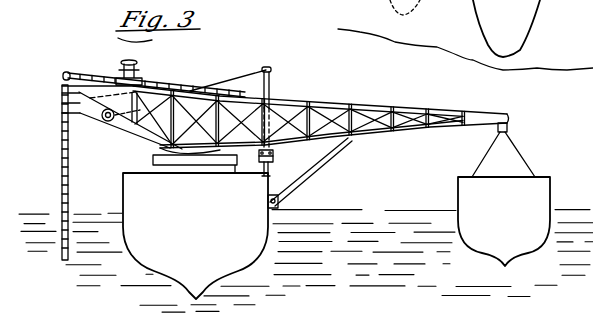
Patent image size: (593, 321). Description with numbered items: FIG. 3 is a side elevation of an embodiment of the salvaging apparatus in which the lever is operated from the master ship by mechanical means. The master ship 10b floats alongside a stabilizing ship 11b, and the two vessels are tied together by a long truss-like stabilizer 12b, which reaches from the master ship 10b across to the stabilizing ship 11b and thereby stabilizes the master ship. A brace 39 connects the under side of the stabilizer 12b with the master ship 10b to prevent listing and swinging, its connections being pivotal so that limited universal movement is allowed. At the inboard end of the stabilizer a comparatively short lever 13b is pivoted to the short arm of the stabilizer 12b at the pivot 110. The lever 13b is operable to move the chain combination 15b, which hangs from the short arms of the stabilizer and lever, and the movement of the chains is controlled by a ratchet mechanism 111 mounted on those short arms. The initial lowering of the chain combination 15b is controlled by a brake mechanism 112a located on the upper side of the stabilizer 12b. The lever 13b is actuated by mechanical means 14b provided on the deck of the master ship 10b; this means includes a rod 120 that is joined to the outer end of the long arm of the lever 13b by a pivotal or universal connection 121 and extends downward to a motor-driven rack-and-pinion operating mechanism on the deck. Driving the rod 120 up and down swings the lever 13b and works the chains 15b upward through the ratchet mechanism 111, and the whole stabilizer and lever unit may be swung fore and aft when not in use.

The master ship 10b is at (195, 227).
The stabilizing ship 11b is at (504, 221).
The stabilizer 12b is at (357, 103).
The lever 13b is at (229, 78).
The mechanical means 14b is at (274, 161).
The chain combination 15b is at (62, 164).
The brace 39 is at (300, 184).
The pivot 110 is at (105, 122).
The ratchet mechanism 111 is at (54, 110).
The brake mechanism 112a is at (123, 66).
The rod 120 is at (273, 83).
The pivotal or universal connection 121 is at (270, 69).